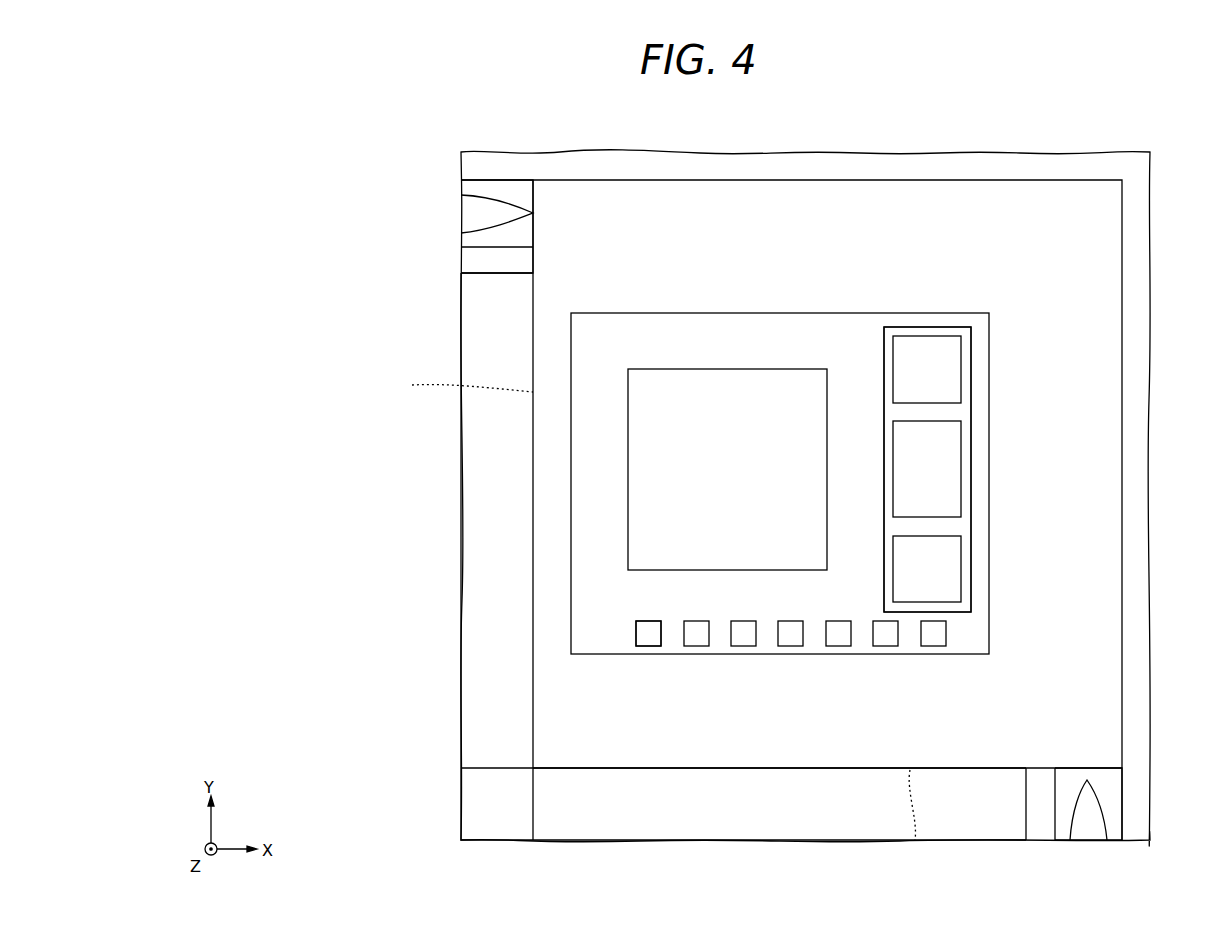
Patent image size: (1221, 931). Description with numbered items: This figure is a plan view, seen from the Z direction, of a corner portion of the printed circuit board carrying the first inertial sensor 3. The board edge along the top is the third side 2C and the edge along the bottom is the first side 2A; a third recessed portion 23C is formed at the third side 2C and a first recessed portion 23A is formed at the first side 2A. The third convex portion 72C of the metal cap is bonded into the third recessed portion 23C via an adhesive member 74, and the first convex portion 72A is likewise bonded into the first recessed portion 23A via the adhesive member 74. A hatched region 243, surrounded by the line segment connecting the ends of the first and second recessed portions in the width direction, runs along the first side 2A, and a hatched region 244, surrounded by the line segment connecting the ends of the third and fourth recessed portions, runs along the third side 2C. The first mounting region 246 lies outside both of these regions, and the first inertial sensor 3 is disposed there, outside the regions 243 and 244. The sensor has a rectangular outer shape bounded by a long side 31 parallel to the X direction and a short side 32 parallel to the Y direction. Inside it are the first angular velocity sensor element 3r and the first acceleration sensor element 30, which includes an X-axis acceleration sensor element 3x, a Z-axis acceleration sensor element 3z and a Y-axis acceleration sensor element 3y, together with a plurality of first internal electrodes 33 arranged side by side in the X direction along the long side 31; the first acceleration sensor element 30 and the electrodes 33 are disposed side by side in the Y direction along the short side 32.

The first side 2A is at (1122, 290).
The third side 2C is at (1023, 180).
The first mounting region 246 is at (863, 190).
The third convex portion 72C is at (511, 190).
The adhesive member 74 is at (536, 212).
The third recessed portion 23C is at (535, 262).
The first recessed portion 23A is at (1042, 775).
The first convex portion 72A is at (1112, 800).
The long side 31 is at (730, 313).
The first angular velocity sensor element 3r is at (767, 378).
The first inertial sensor 3 is at (996, 345).
The first acceleration sensor element 30 is at (971, 420).
The X-axis acceleration sensor element 3x is at (955, 380).
The Z-axis acceleration sensor element 3z is at (957, 468).
The Y-axis acceleration sensor element 3y is at (957, 580).
The short side 32 is at (991, 630).
The first internal electrodes 33 is at (648, 645).
The region surrounded by line segment L2 244 is at (485, 488).
The region surrounded by line segment L1 243 is at (765, 808).